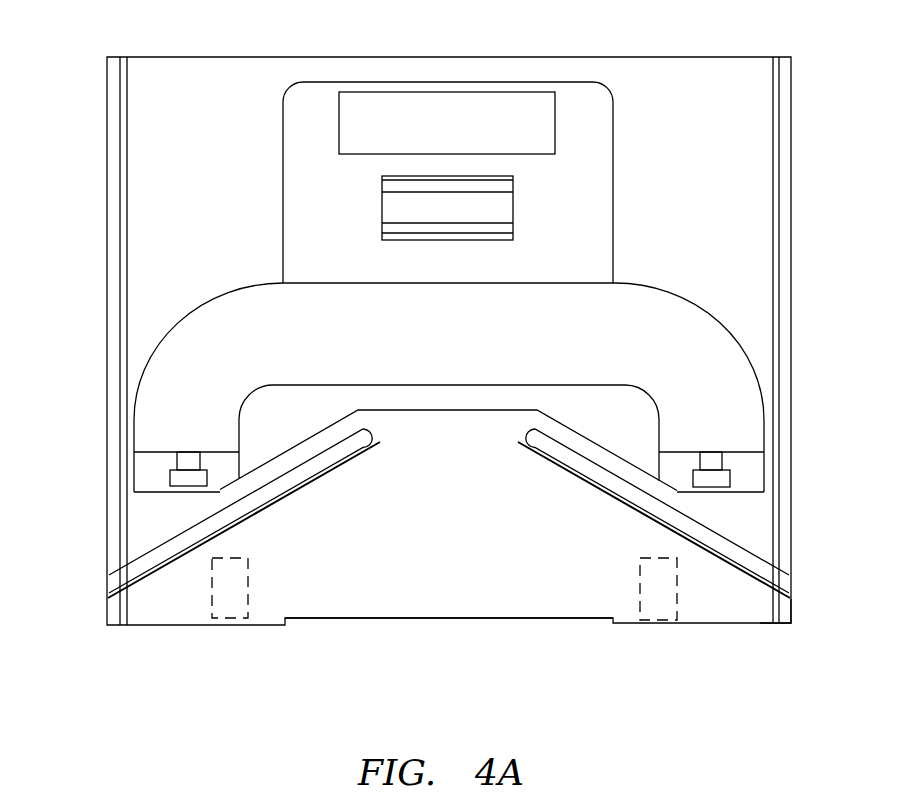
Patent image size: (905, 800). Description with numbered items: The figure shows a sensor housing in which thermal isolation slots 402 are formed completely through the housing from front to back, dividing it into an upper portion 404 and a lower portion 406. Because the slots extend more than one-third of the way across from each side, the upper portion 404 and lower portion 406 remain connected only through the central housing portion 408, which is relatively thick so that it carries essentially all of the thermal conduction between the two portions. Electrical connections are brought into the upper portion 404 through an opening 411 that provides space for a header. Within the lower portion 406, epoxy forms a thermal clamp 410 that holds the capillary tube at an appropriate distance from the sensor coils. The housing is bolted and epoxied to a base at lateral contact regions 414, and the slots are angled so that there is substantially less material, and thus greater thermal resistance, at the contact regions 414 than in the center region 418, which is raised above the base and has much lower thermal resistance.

The thermal isolation slots 402 is at (110, 578).
The upper portion 404 is at (730, 57).
The lower portion 406 is at (791, 625).
The central housing portion 408 is at (468, 499).
The thermal clamp 410 is at (168, 479).
The opening 411 is at (467, 134).
The contact region 414 is at (232, 605).
The center region of the housing 418 is at (462, 620).